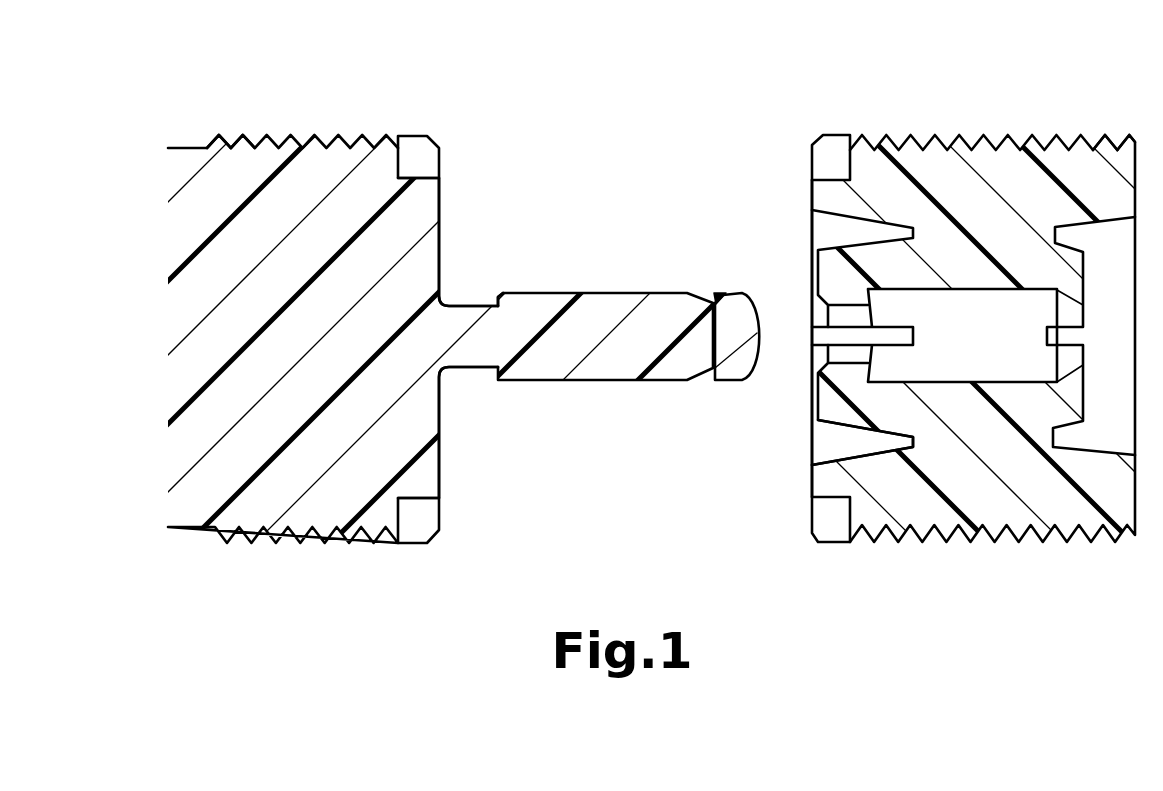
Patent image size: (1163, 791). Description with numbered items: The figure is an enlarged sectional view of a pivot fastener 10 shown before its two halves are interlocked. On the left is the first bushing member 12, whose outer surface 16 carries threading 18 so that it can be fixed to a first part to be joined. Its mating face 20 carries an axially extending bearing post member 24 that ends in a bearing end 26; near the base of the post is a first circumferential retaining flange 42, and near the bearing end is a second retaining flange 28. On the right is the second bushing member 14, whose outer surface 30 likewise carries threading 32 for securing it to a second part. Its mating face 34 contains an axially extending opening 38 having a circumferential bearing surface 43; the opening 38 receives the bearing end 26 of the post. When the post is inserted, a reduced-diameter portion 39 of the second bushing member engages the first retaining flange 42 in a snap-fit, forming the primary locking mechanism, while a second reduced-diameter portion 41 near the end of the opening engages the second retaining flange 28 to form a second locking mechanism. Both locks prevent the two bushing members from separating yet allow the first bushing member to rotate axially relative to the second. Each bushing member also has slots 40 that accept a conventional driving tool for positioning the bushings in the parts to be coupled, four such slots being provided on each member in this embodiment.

The pivot fastener 10 is at (572, 140).
The first bushing member 12 is at (301, 110).
The second bushing member 14 is at (947, 110).
The outer surface 16 is at (212, 141).
The threading 18 is at (219, 142).
The mating face 20 is at (450, 473).
The bearing post member 24 is at (577, 292).
The bearing end 26 is at (749, 297).
The second retaining flange 28 is at (716, 293).
The outer surface 30 is at (1103, 146).
The threading 32 is at (1111, 144).
The mating face 34 is at (796, 468).
The opening 38 is at (963, 349).
The reduced-diameter portion 39 is at (830, 399).
The slots 40 is at (436, 163).
The second reduced-diameter portion 41 is at (1073, 286).
The first circumferential retaining flange 42 is at (500, 301).
The circumferential bearing surface 43 is at (1028, 290).